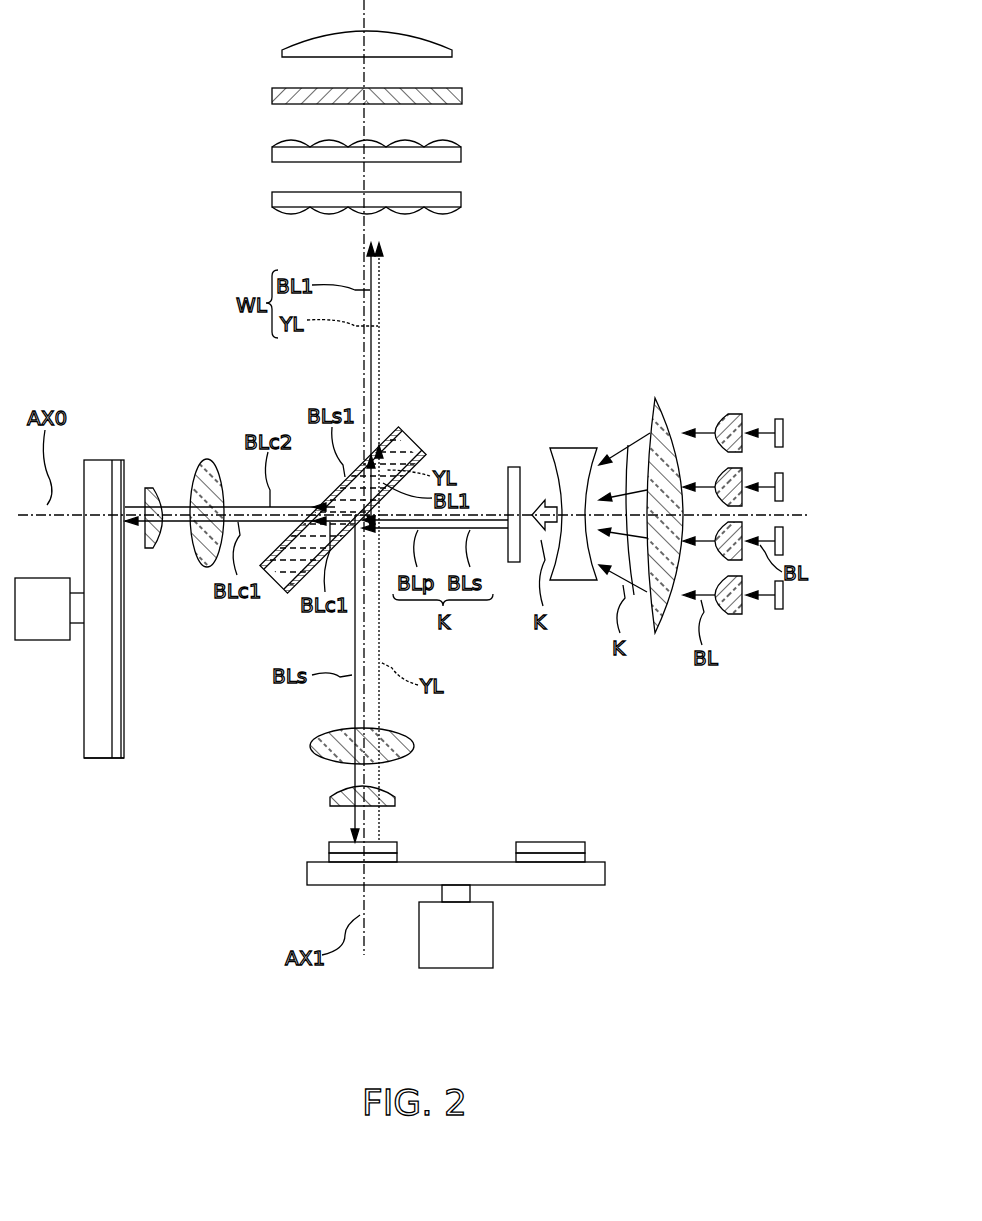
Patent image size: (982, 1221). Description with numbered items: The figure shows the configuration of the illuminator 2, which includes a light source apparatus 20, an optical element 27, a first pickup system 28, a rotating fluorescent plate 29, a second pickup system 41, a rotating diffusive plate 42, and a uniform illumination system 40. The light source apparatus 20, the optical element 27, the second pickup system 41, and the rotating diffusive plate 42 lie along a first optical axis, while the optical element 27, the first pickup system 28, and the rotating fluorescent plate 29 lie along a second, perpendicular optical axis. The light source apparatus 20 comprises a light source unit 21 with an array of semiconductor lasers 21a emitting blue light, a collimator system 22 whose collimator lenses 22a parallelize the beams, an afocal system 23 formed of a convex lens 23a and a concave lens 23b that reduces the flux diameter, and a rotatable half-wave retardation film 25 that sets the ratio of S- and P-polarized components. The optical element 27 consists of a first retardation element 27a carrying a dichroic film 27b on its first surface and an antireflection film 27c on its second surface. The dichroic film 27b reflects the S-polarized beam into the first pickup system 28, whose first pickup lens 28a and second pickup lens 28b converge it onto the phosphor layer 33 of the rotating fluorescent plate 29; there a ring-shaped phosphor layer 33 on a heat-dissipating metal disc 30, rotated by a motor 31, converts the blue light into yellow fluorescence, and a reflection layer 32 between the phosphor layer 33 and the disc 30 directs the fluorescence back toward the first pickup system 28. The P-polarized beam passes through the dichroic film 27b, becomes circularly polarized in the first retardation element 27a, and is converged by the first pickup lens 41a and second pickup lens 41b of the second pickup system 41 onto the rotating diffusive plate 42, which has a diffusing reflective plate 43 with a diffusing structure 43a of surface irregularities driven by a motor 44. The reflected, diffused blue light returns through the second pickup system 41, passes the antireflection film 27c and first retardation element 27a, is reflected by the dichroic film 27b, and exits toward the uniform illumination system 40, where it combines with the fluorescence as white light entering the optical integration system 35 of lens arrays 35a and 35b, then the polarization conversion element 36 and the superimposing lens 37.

The illuminator 2 is at (627, 115).
The light source apparatus 20 is at (568, 280).
The light source unit 21 is at (779, 501).
The semiconductor laser 21a is at (778, 612).
The collimator system 22 is at (738, 513).
The collimator lens 22a is at (733, 616).
The afocal system 23 is at (622, 464).
The convex lens 23a is at (670, 485).
The concave lens 23b is at (573, 448).
The retardation film 25 is at (513, 565).
The optical element 27 is at (389, 453).
The first retardation element 27a is at (365, 468).
The dichroic film 27b is at (427, 455).
The antireflection film 27c is at (390, 430).
The first pickup system 28 is at (419, 765).
The first pickup lens 28a is at (412, 740).
The second pickup lens 28b is at (395, 796).
The rotating fluorescent plate 29 is at (522, 890).
The disc 30 is at (595, 878).
The motor 31 is at (483, 945).
The reflection layer 32 is at (585, 858).
The phosphor layer 33 is at (585, 845).
The optical integration system 35 is at (539, 143).
The lens array 35a is at (461, 200).
The lens array 35b is at (461, 155).
The polarization conversion element 36 is at (462, 98).
The superimposing lens 37 is at (447, 40).
The uniform illumination system 40 is at (584, 25).
The second pickup system 41 is at (187, 467).
The first pickup lens 41a is at (210, 460).
The second pickup lens 41b is at (155, 485).
The rotating diffusive plate 42 is at (93, 780).
The diffusing reflective plate 43 is at (96, 467).
The diffusing structure 43a is at (118, 760).
The motor 44 is at (45, 632).